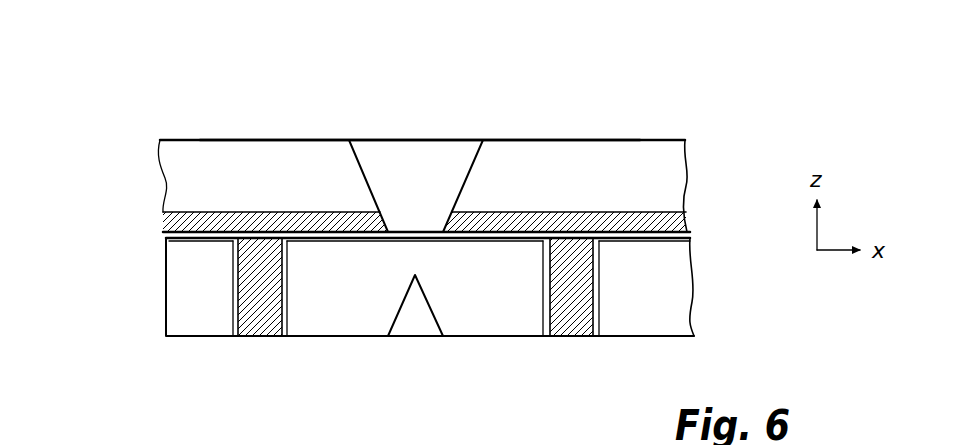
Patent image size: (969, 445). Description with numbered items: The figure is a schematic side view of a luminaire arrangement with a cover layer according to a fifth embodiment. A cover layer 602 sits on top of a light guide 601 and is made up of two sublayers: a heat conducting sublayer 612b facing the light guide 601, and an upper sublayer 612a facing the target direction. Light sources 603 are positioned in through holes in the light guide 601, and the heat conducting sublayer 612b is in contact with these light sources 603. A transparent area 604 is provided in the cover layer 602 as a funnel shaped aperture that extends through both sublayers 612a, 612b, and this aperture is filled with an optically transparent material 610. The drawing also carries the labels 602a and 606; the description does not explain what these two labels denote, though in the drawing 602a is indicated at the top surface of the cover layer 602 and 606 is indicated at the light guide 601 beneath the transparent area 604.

The light guide 601 is at (430, 341).
The cover layer 602 is at (183, 180).
The upper surface of substrate 602a is at (591, 136).
The light source 603 is at (603, 400).
The transparent area 604 is at (419, 127).
The light emitting element 606 is at (412, 359).
The optically transparent material 610 is at (438, 152).
The upper sublayer 612a is at (662, 173).
The heat conducting sublayer 612b is at (683, 220).